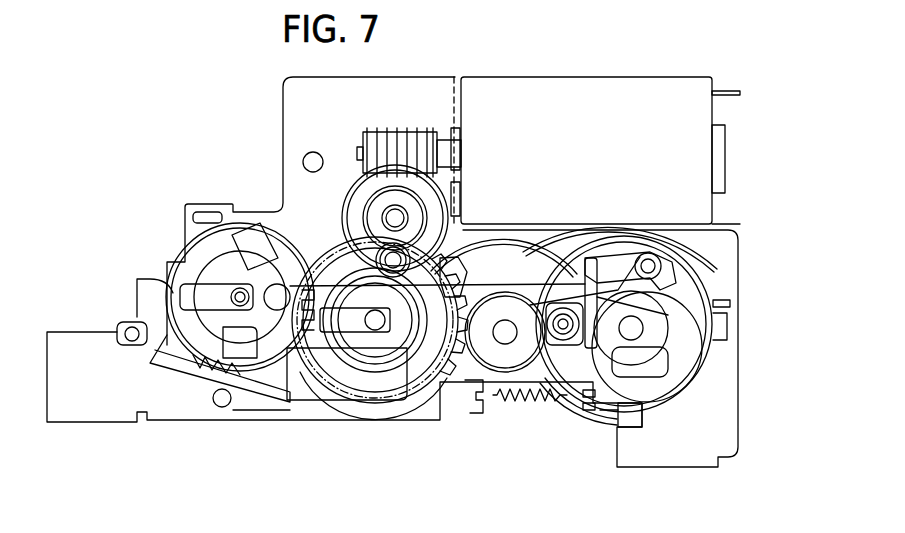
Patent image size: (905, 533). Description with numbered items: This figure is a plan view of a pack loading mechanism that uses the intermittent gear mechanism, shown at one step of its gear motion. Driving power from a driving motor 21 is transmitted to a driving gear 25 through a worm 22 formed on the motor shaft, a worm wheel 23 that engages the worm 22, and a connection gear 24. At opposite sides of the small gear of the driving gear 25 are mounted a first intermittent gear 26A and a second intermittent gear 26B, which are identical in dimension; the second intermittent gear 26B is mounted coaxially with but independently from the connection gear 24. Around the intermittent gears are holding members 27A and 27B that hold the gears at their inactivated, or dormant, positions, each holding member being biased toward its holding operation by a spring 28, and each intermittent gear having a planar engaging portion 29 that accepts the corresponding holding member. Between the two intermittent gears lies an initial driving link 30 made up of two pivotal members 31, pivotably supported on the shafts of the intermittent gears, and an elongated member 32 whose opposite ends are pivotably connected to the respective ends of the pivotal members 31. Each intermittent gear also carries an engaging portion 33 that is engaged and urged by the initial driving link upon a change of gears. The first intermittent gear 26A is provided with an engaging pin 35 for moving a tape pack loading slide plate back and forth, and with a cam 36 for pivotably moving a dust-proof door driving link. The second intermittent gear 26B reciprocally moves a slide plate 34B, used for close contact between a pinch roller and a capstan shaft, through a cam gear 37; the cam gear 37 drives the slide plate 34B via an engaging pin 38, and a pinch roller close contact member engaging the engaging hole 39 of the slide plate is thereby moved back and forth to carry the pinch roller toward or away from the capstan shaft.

The driving motor 21 is at (497, 93).
The worm 22 is at (385, 131).
The worm wheel 23 is at (353, 187).
The connection gear 24 is at (422, 390).
The driving gear 25 is at (472, 410).
The first intermittent gear 26A is at (640, 225).
The second intermittent gear 26B is at (348, 405).
The holding member 27A is at (553, 245).
The holding member 27B is at (298, 392).
The spring 28 is at (200, 368).
The planar engaging portion 29 is at (377, 400).
The initial driving link 30 is at (471, 226).
The pivotal member 31 is at (357, 258).
The elongated member 32 is at (497, 268).
The engaging portion 33 is at (306, 262).
The slide plate 34B is at (180, 243).
The engaging pin 35 is at (560, 408).
The cam 36 is at (625, 410).
The cam gear 37 is at (137, 280).
The engaging pin 38 is at (243, 350).
The engaging hole 39 is at (200, 211).